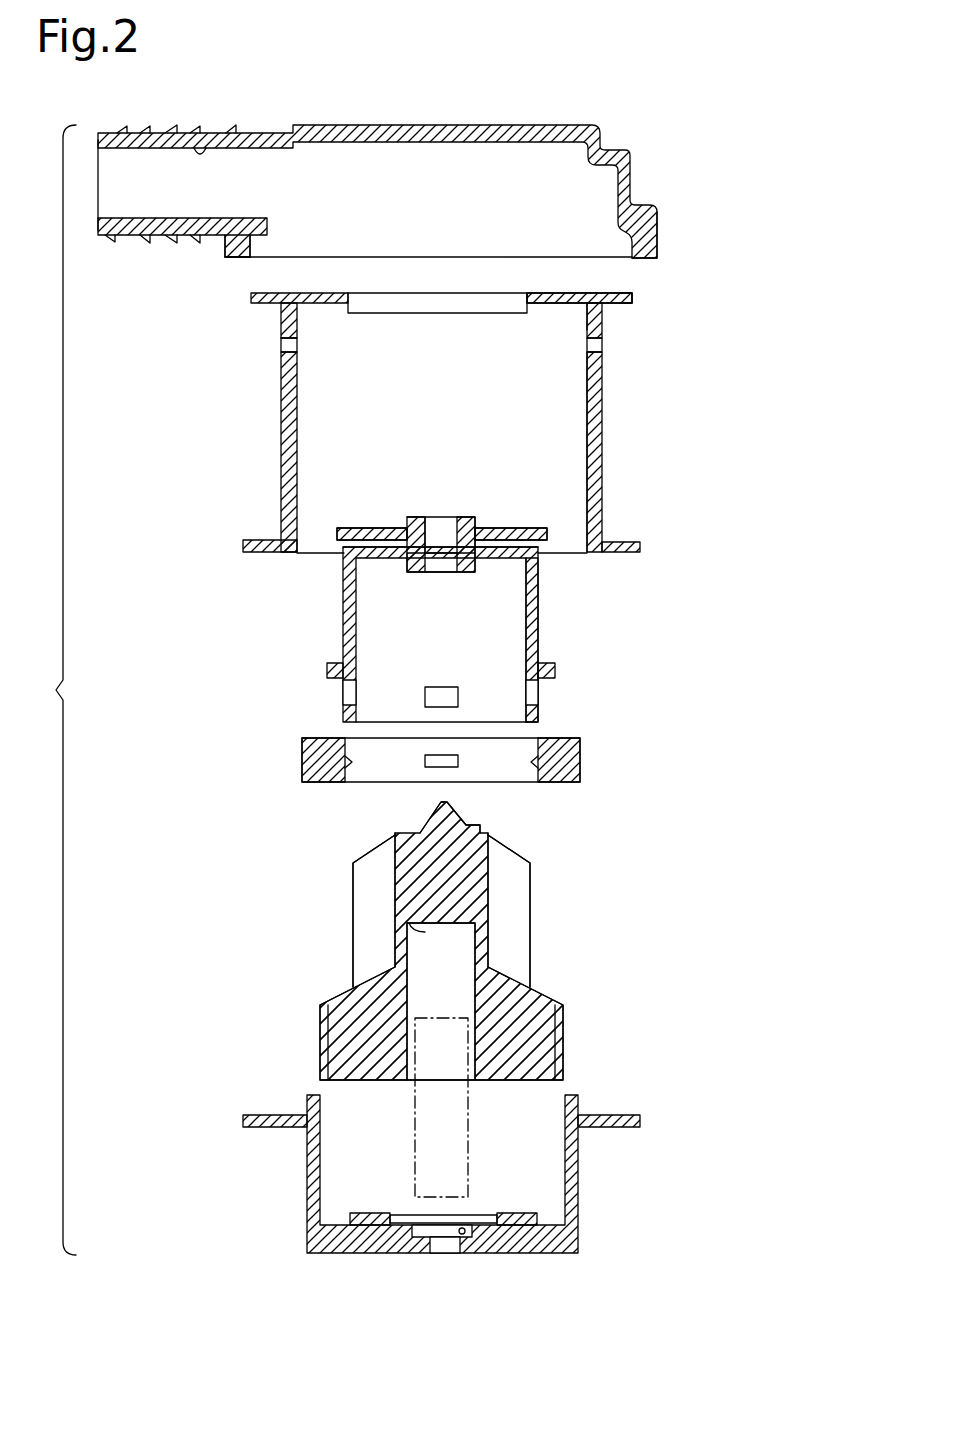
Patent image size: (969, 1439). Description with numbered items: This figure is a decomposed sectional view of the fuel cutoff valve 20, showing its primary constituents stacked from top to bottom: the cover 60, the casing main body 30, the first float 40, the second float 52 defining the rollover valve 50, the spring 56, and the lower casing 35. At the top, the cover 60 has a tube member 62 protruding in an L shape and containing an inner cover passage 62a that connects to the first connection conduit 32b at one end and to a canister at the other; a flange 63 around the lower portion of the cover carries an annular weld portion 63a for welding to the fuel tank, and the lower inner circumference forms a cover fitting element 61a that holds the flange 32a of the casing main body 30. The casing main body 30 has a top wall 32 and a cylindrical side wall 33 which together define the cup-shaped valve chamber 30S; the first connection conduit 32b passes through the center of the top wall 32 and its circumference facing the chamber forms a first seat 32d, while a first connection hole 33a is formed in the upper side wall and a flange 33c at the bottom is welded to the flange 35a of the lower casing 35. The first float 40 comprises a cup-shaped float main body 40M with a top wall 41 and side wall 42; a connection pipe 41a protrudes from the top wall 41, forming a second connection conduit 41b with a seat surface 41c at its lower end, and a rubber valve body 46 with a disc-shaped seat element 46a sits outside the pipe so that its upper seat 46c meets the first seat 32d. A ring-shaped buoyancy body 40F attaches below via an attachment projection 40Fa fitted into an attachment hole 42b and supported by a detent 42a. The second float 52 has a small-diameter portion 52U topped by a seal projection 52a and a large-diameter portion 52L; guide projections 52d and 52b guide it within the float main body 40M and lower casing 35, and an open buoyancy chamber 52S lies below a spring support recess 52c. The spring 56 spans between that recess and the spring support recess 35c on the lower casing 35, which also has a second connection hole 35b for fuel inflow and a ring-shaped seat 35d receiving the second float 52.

The fuel cutoff valve 20 is at (666, 128).
The cover 60 is at (443, 125).
The cover fitting element 61a is at (660, 238).
The tube member 62 is at (157, 133).
The cover passage 62a is at (201, 150).
The flange 63 is at (222, 240).
The annular weld portion 63a is at (230, 262).
The casing main body 30 is at (598, 458).
The valve chamber 30S is at (588, 405).
The top wall 32 is at (536, 300).
The flange 32a is at (633, 298).
The first connection conduit 32b is at (455, 305).
The first seat 32d is at (537, 308).
The side wall 33 is at (597, 502).
The first connection hole 33a is at (603, 345).
The flange 33c is at (256, 555).
The rubber valve body 46 is at (567, 440).
The seat element 46a is at (527, 527).
The seat 46c is at (492, 527).
The top wall 41 is at (378, 560).
The connection pipe 41a is at (467, 514).
The second connection conduit 41b is at (448, 540).
The seat surface 41c is at (458, 566).
The first float 40 is at (558, 578).
The float main body 40M is at (540, 638).
The side wall 42 is at (345, 597).
The detent 42a is at (327, 670).
The attachment hole 42b is at (350, 694).
The buoyancy body 40F is at (582, 757).
The attachment projection 40Fa is at (537, 783).
The rollover valve 50 is at (532, 995).
The second float 52 is at (530, 978).
The small-diameter portion 52U is at (482, 884).
The large-diameter portion 52L is at (540, 1018).
The seal projection 52a is at (427, 824).
The guide projections 52b is at (560, 1054).
The spring support recess 52c is at (390, 925).
The guide projections 52d is at (370, 932).
The buoyancy chamber 52S is at (415, 958).
The spring 56 is at (475, 1160).
The lower casing 35 is at (578, 1200).
The flange 35a is at (262, 1114).
The second connection hole 35b is at (441, 1256).
The spring support recess 35c is at (464, 1236).
The ring-shaped seat 35d is at (525, 1205).